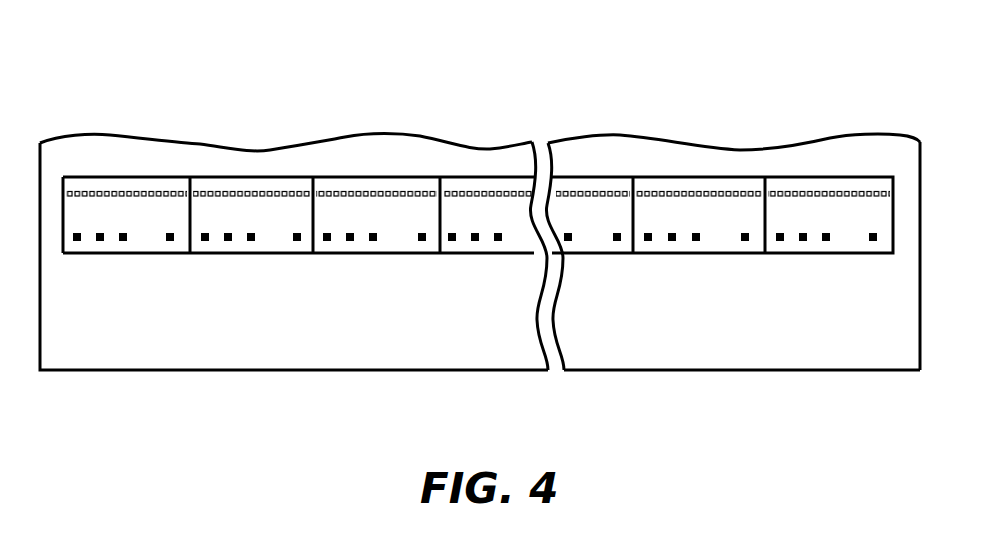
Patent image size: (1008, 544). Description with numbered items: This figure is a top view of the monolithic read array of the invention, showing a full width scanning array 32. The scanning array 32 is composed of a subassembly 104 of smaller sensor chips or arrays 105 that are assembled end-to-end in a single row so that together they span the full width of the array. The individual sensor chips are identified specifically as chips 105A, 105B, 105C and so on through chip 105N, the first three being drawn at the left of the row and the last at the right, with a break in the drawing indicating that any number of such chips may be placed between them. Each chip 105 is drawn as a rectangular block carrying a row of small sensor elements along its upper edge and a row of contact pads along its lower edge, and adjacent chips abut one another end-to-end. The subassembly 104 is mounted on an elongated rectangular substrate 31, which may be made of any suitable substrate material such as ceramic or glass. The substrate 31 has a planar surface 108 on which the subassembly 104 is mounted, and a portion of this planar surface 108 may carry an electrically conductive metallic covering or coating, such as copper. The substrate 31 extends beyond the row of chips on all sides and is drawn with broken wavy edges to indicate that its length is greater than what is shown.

The full width scanning array 32 is at (490, 68).
The substrate 31 is at (210, 370).
The subassembly 104 is at (678, 168).
The sensor chips 105 is at (675, 274).
The sensor chip 105A is at (147, 253).
The sensor chip 105B is at (270, 253).
The sensor chip 105C is at (396, 253).
The sensor chip 105N is at (852, 253).
The planar surface 108 is at (754, 325).